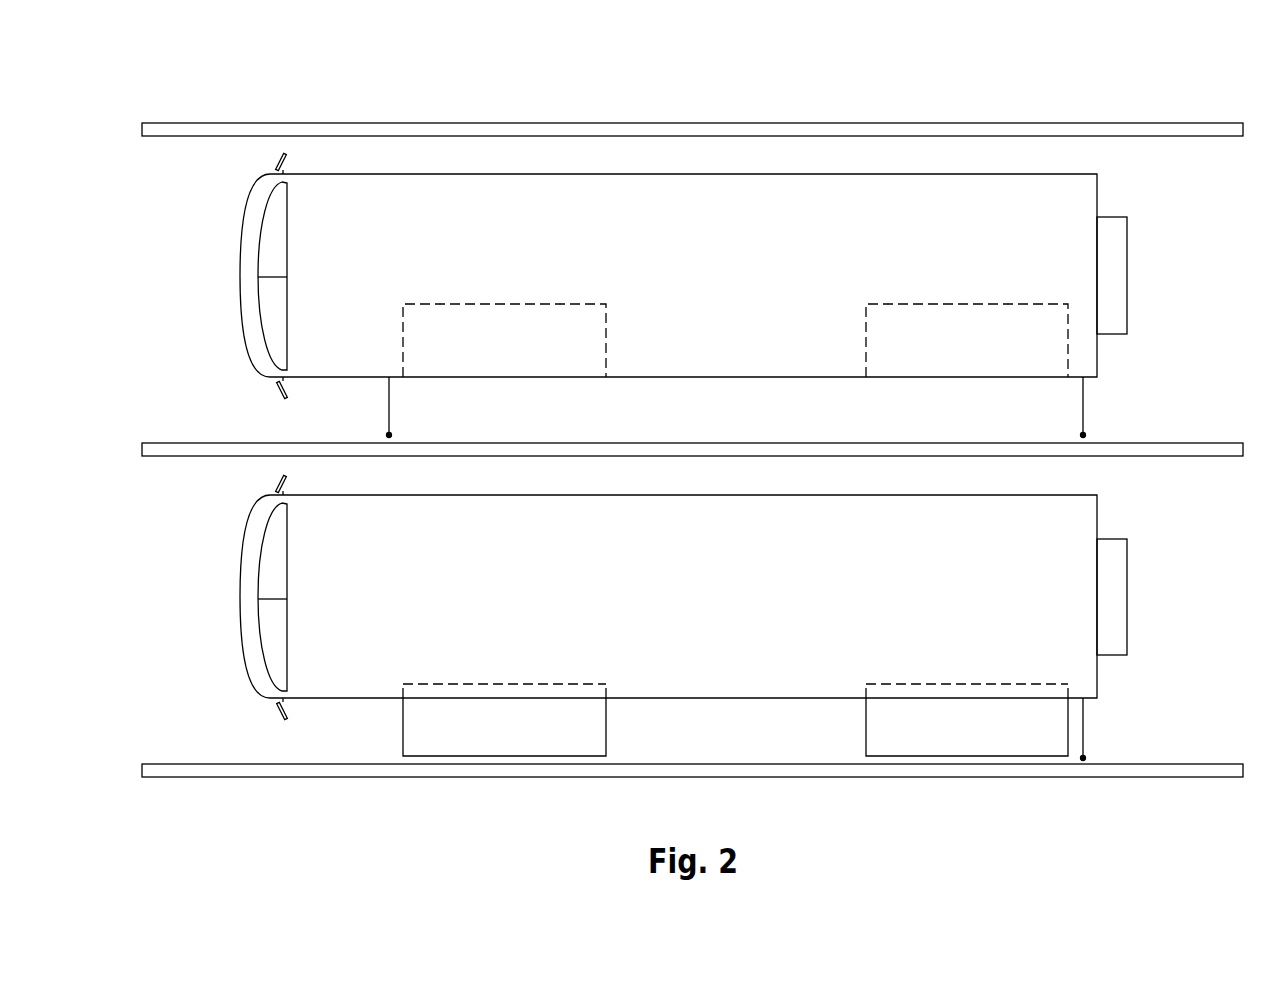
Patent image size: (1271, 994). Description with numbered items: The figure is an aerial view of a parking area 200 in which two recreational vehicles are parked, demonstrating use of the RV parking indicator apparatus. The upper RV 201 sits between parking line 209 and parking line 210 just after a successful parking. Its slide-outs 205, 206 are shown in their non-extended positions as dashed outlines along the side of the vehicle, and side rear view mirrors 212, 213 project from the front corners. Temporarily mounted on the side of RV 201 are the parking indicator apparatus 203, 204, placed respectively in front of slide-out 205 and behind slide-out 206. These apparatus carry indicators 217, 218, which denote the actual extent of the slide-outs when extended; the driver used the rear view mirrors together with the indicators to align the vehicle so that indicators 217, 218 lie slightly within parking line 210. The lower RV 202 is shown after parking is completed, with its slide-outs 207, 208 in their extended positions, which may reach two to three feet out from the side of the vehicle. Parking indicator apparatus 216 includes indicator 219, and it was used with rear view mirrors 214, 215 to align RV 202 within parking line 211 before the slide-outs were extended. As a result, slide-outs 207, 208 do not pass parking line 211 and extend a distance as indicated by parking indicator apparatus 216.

The parking area 200 is at (710, 50).
The RV 201 is at (708, 280).
The RV 202 is at (697, 598).
The RV parking indicator apparatus 203 is at (386, 399).
The RV parking indicator apparatus 204 is at (1080, 396).
The slide-out 205 is at (403, 333).
The slide-out 206 is at (866, 325).
The slide-out 207 is at (401, 727).
The slide-out 208 is at (866, 720).
The parking line 209 is at (142, 131).
The parking line 210 is at (142, 450).
The parking line 211 is at (142, 771).
The side rear view mirror 212 is at (275, 160).
The side rear view mirror 213 is at (273, 392).
The side rear view mirror 214 is at (275, 481).
The rear view mirror 215 is at (275, 713).
The RV parking indicator apparatus 216 is at (1083, 720).
The indicator 217 is at (390, 434).
The indicator 218 is at (1085, 433).
The indicator 219 is at (1085, 753).